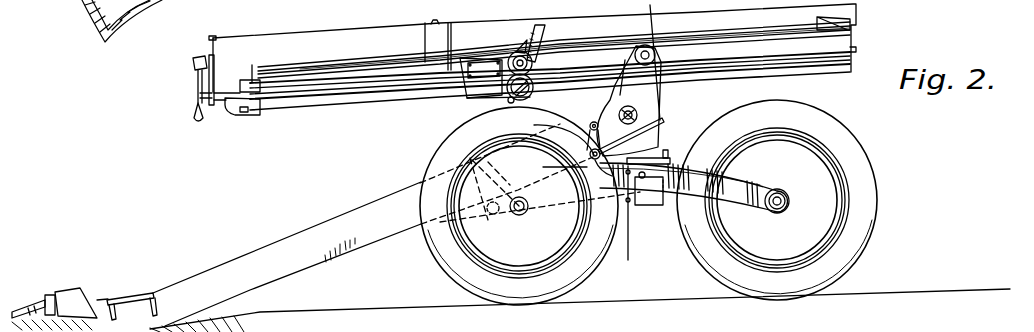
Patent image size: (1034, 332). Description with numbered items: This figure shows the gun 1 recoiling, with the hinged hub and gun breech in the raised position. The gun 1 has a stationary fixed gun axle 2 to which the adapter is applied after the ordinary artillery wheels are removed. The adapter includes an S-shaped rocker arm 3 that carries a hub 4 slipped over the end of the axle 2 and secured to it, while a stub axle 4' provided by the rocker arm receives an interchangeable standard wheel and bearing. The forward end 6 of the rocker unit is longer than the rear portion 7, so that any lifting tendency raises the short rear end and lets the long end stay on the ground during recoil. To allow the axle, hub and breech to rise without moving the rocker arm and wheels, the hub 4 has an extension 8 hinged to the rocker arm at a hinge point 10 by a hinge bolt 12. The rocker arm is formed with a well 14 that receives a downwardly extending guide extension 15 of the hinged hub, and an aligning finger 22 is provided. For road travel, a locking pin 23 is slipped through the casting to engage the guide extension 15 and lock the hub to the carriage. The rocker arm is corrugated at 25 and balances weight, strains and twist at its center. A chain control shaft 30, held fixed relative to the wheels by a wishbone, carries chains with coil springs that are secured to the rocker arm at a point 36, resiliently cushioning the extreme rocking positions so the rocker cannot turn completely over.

The gun 1 is at (357, 38).
The gun axle 2 is at (642, 121).
The S-shaped rocker arm 3 is at (738, 204).
The hub 4 is at (639, 133).
The stub axle 4' is at (649, 217).
The forward end of the rocker unit 6 is at (777, 200).
The rear portion of the rocker unit 7 is at (558, 206).
The hub extension 8 is at (591, 143).
The hinge point 10 is at (554, 168).
The hinge bolt 12 is at (554, 135).
The well 14 is at (648, 205).
The guide extension 15 is at (648, 147).
The aligning finger 22 is at (690, 157).
The locking pin 23 is at (630, 252).
The corrugation 25 is at (710, 182).
The chain control shaft 30 is at (487, 223).
The chain attachment point 36 is at (593, 122).